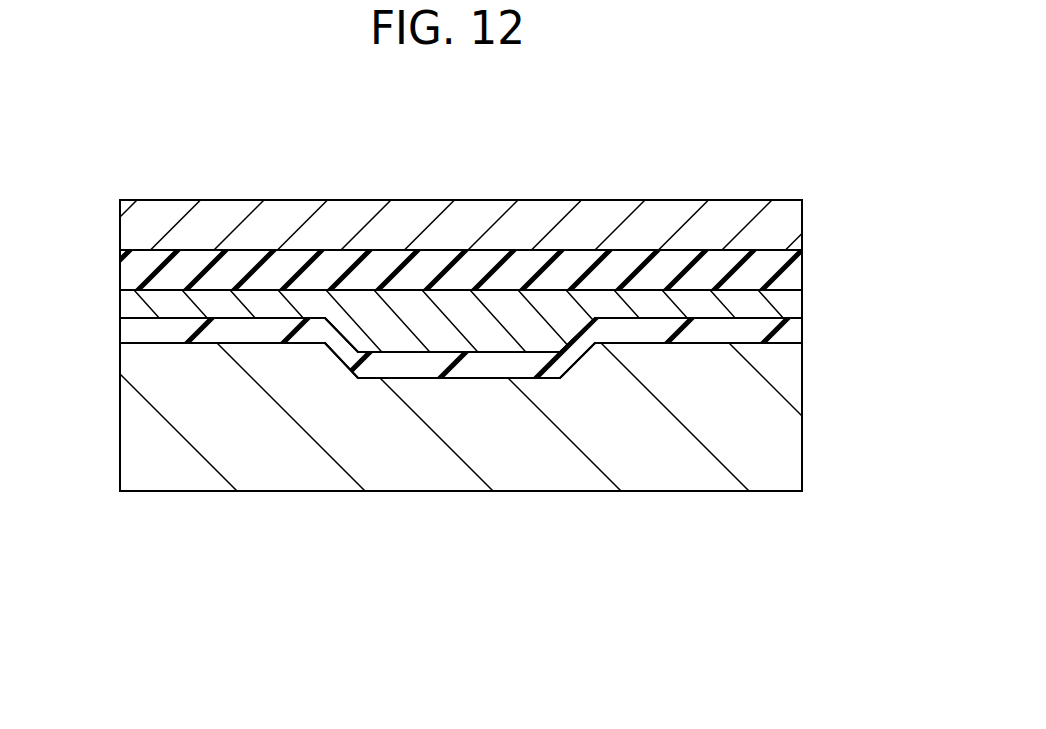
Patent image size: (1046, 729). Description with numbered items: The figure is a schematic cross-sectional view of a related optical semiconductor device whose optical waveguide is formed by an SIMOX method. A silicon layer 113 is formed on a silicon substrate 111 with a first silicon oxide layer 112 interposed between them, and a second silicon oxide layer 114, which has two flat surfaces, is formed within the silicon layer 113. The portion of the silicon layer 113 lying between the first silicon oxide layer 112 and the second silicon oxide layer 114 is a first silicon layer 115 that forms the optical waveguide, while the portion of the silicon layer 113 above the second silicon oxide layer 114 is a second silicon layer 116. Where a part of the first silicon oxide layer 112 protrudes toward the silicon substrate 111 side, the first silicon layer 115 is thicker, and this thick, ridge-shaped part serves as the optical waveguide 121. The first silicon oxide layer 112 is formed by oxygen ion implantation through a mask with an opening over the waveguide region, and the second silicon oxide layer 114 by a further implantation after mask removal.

The silicon substrate 111 is at (783, 430).
The first silicon oxide layer 112 is at (790, 332).
The silicon layer 113 is at (108, 318).
The second silicon oxide layer 114 is at (792, 277).
The first silicon layer 115 is at (790, 305).
The second silicon layer 116 is at (785, 230).
The optical waveguide 121 is at (604, 292).